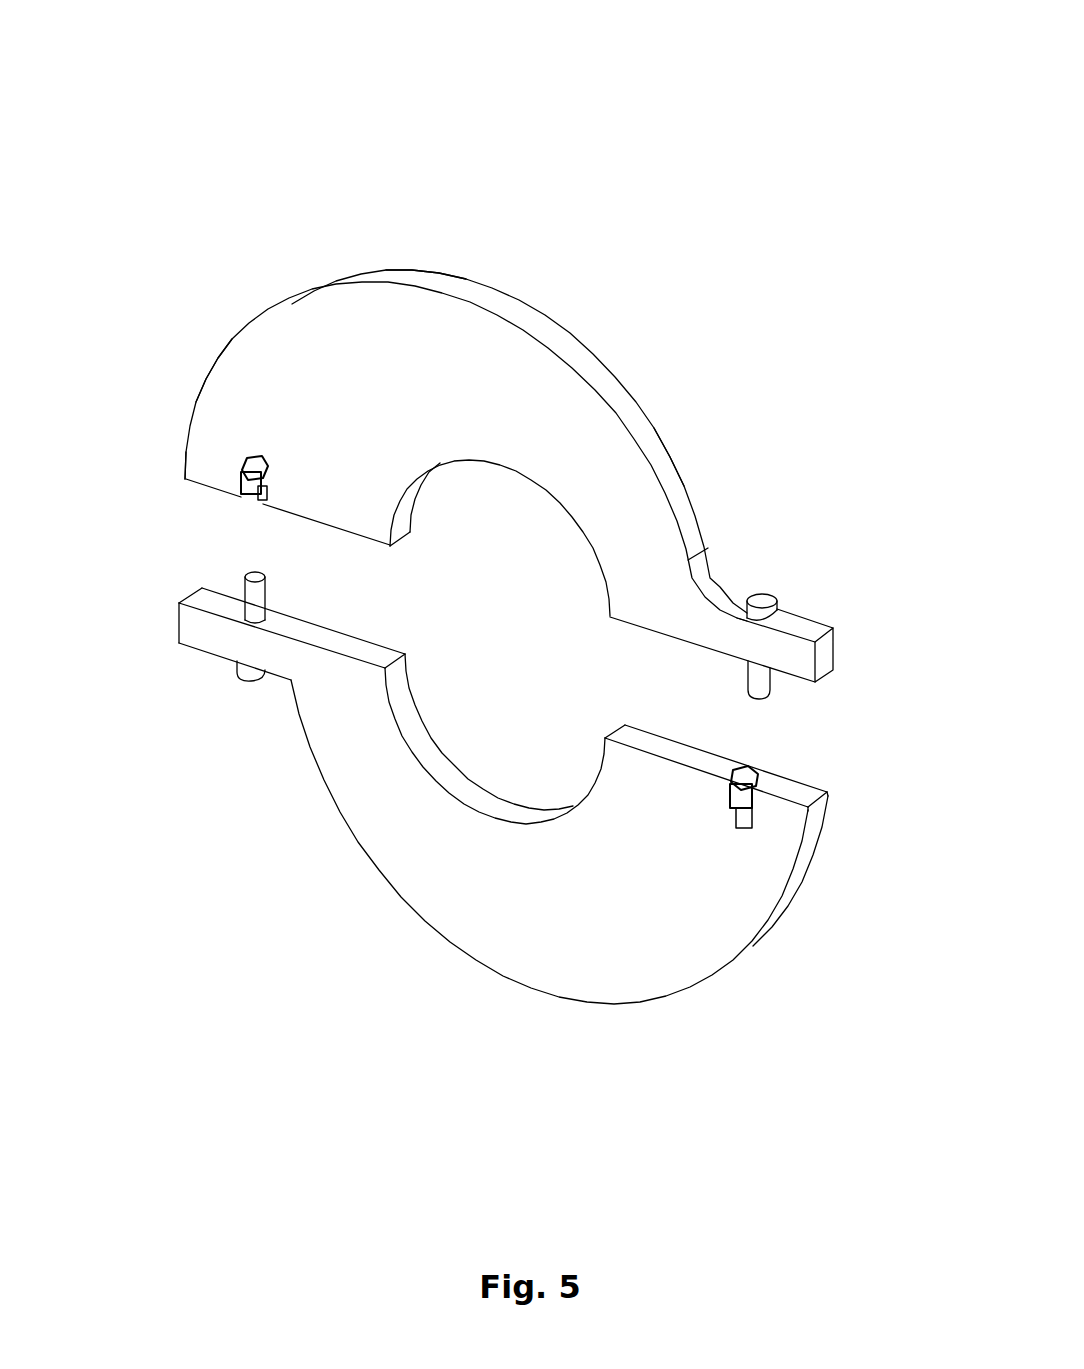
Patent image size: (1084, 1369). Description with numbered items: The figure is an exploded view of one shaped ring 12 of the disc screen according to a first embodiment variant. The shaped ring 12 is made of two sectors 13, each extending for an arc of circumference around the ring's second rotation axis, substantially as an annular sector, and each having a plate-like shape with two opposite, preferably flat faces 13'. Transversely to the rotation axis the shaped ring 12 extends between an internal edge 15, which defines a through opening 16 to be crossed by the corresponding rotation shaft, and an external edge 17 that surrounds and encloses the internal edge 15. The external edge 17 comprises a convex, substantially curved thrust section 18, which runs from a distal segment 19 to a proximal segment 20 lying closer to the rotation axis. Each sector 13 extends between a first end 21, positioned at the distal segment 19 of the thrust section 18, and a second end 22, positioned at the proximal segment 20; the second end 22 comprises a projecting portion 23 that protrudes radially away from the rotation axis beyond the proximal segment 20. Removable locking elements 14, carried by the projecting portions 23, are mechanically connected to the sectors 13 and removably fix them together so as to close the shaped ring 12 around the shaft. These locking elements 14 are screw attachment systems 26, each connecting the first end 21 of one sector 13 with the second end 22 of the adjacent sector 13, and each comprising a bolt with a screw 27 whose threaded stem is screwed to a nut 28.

The shaped ring 12 is at (728, 154).
The sector 13 is at (496, 610).
The face 13' is at (576, 650).
The removable locking element 14 is at (795, 553).
The internal edge 15 is at (572, 520).
The through opening 16 is at (465, 557).
The external edge 17 is at (528, 323).
The thrust section 18 is at (469, 262).
The distal segment 19 is at (192, 348).
The proximal segment 20 is at (698, 456).
The first end 21 is at (178, 490).
The second end 22 is at (858, 643).
The projecting portion 23 is at (773, 650).
The screw attachment system 26 is at (236, 512).
The screw 27 is at (764, 584).
The nut 28 is at (240, 462).